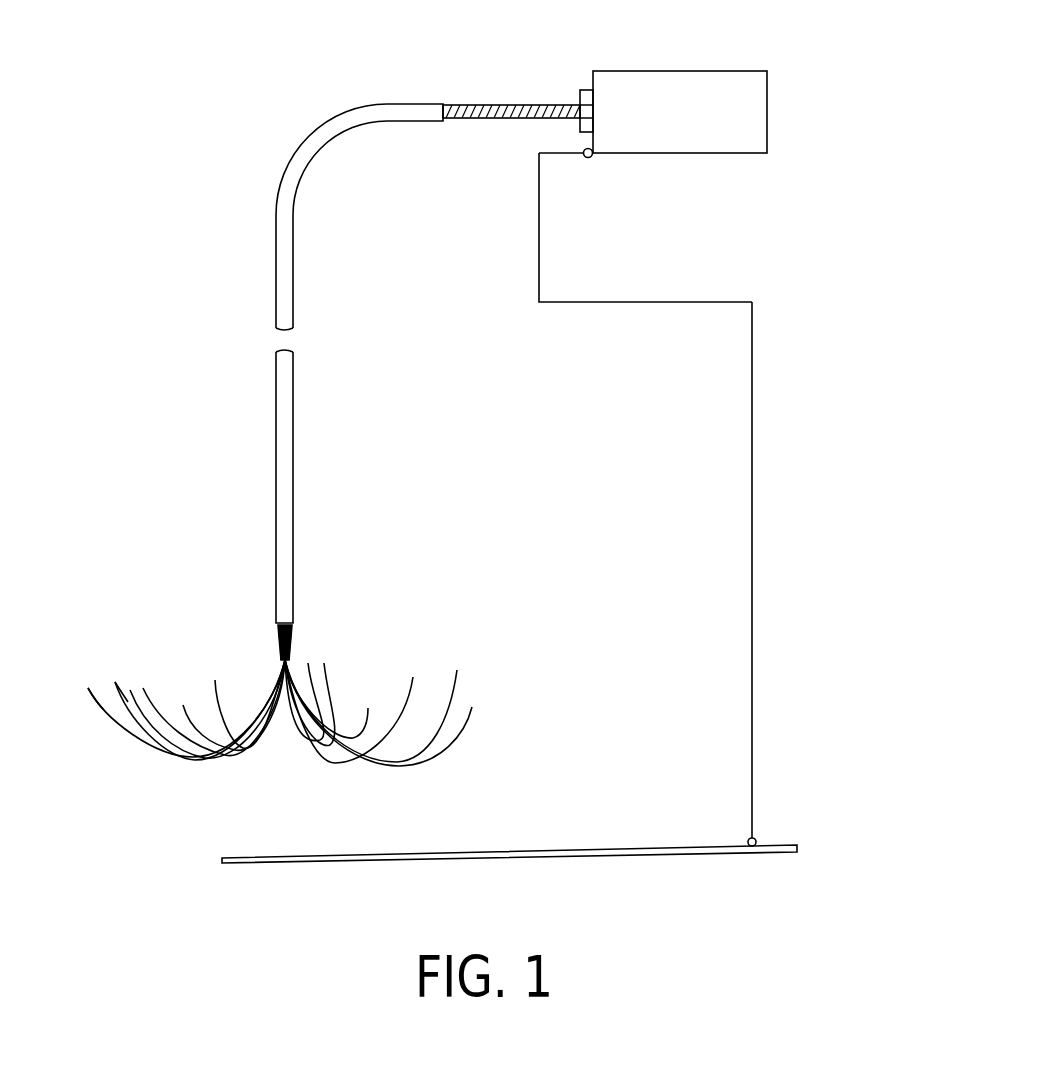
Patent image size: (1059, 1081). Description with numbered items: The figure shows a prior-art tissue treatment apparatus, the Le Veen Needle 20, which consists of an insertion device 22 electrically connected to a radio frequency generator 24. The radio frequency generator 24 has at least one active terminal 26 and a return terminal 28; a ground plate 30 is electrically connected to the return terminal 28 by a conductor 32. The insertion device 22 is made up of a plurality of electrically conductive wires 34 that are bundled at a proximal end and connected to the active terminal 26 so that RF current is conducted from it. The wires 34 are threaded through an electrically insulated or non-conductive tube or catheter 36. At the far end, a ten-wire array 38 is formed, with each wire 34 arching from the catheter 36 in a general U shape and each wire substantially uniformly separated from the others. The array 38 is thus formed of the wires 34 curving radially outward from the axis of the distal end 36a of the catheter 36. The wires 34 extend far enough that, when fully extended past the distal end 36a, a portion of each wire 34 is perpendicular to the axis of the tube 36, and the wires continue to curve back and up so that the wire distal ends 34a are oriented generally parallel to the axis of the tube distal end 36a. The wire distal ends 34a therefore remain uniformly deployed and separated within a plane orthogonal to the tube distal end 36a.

The Le Veen Needle 20 is at (694, 207).
The insertion device 22 is at (304, 398).
The radio frequency generator 24 is at (711, 66).
The active terminal 26 is at (580, 95).
The return terminal 28 is at (589, 158).
The ground plate 30 is at (645, 847).
The conductor 32 is at (752, 385).
The electrically conductive wires 34 is at (490, 107).
The wire distal ends 34a is at (115, 682).
The tube or catheter 36 is at (293, 517).
The distal end of catheter 36a is at (293, 628).
The 10-wire array 38 is at (536, 714).